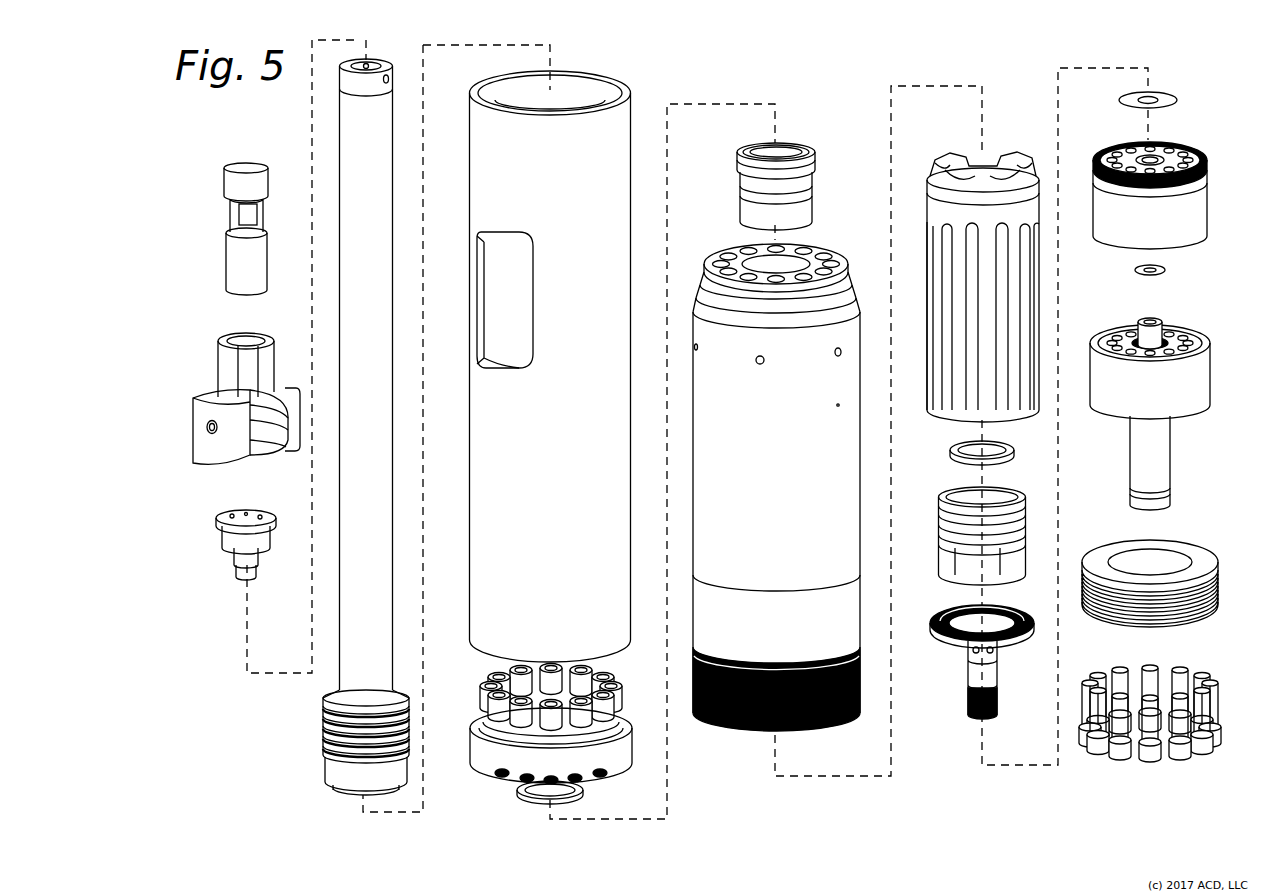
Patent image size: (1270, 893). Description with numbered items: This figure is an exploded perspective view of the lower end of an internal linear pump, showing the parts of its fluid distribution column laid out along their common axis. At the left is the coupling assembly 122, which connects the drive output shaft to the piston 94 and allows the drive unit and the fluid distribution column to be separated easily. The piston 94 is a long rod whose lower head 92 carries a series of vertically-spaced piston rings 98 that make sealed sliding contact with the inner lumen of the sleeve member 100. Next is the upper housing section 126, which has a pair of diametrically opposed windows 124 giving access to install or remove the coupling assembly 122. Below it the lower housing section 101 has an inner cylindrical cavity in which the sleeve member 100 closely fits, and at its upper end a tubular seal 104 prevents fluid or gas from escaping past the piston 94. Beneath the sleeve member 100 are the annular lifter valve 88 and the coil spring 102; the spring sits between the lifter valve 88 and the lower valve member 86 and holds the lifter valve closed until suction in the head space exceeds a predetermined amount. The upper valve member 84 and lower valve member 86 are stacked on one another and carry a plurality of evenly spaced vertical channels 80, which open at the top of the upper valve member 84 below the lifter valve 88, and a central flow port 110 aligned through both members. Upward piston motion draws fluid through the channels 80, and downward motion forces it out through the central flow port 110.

The coupling assembly 122 is at (197, 575).
The piston 94 is at (388, 363).
The piston rings 98 is at (323, 748).
The head 92 is at (325, 766).
The window 124 is at (480, 278).
The upper housing section 126 is at (572, 463).
The tubular seal 104 is at (810, 150).
The lower housing section 101 is at (800, 465).
The sleeve member 100 is at (930, 195).
The coil spring 102 is at (943, 620).
The lifter valve 88 is at (951, 640).
The central flow port 110 is at (1142, 150).
The vertical channels 80 is at (1193, 145).
The upper valve member 84 is at (1197, 210).
The lower valve member 86 is at (1185, 415).